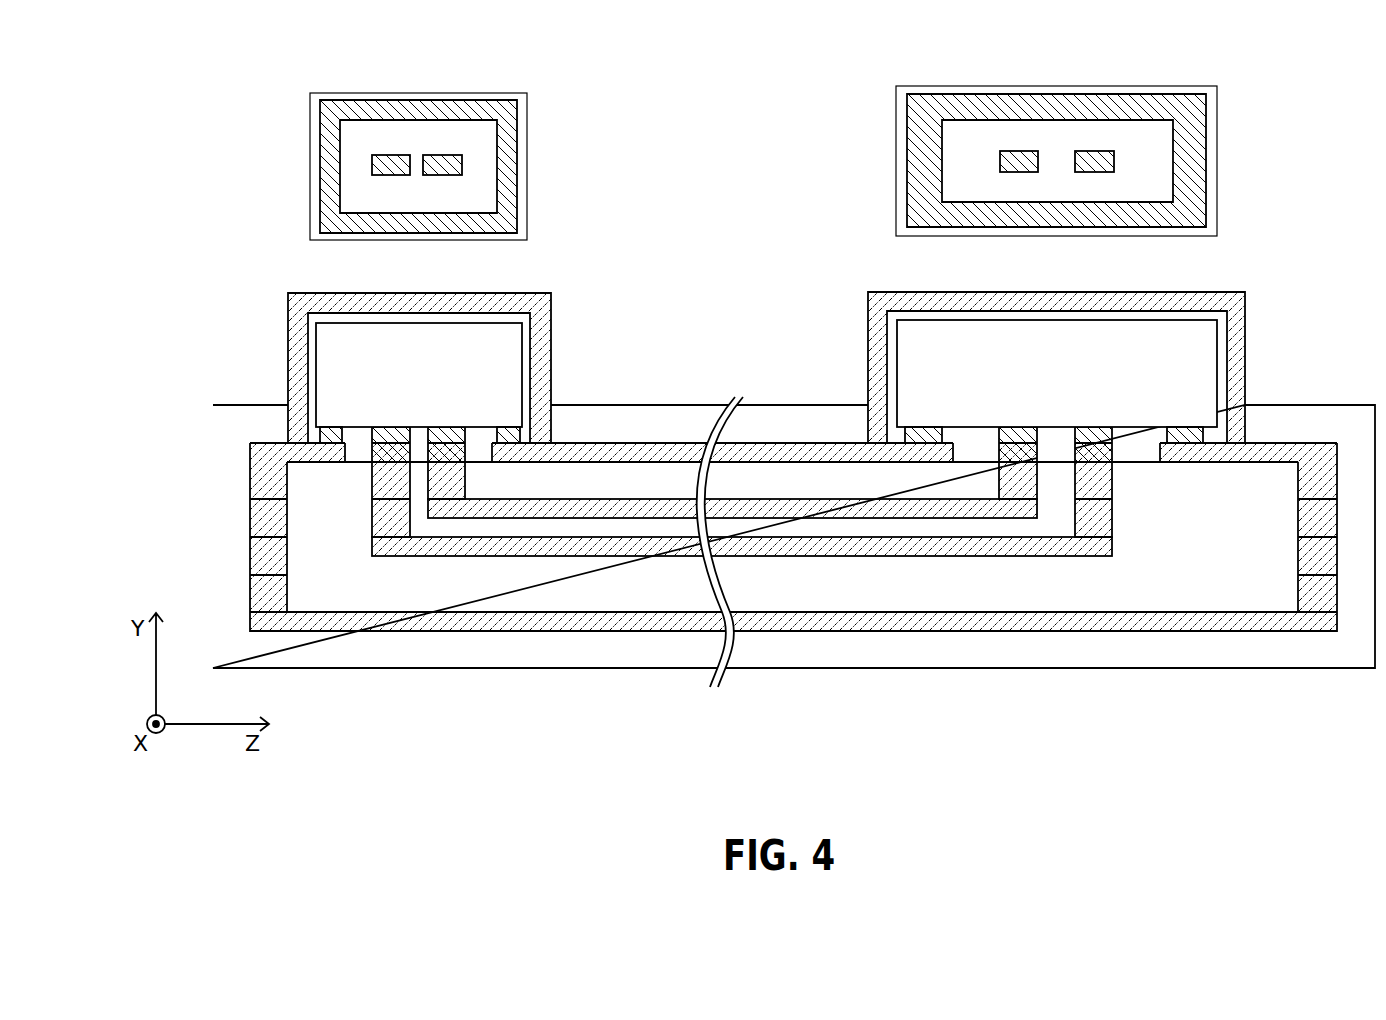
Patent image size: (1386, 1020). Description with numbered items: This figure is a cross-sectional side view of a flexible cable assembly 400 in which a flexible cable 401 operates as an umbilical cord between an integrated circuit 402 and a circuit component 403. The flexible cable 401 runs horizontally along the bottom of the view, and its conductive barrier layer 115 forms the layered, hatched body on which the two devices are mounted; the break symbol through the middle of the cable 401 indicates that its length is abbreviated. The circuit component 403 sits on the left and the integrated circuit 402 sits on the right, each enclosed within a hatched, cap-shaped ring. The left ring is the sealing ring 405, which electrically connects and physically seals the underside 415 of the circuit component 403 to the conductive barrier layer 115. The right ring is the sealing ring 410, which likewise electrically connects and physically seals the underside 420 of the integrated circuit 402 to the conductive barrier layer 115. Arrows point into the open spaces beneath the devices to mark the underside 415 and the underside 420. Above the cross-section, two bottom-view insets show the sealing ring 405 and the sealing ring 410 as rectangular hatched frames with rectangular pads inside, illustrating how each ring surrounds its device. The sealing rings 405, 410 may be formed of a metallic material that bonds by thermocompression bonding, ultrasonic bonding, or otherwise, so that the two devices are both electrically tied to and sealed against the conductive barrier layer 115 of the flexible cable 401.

The flexible cable assembly 400 is at (751, 405).
The flexible cable 401 is at (1003, 696).
The integrated circuit 402 is at (1039, 378).
The circuit component 403 is at (400, 386).
The sealing ring 405 is at (510, 118).
The sealing ring 410 is at (917, 133).
The underside of circuit component 415 is at (297, 251).
The underside of integrated circuit 420 is at (1218, 255).
The conductive barrier layer 115 is at (608, 457).